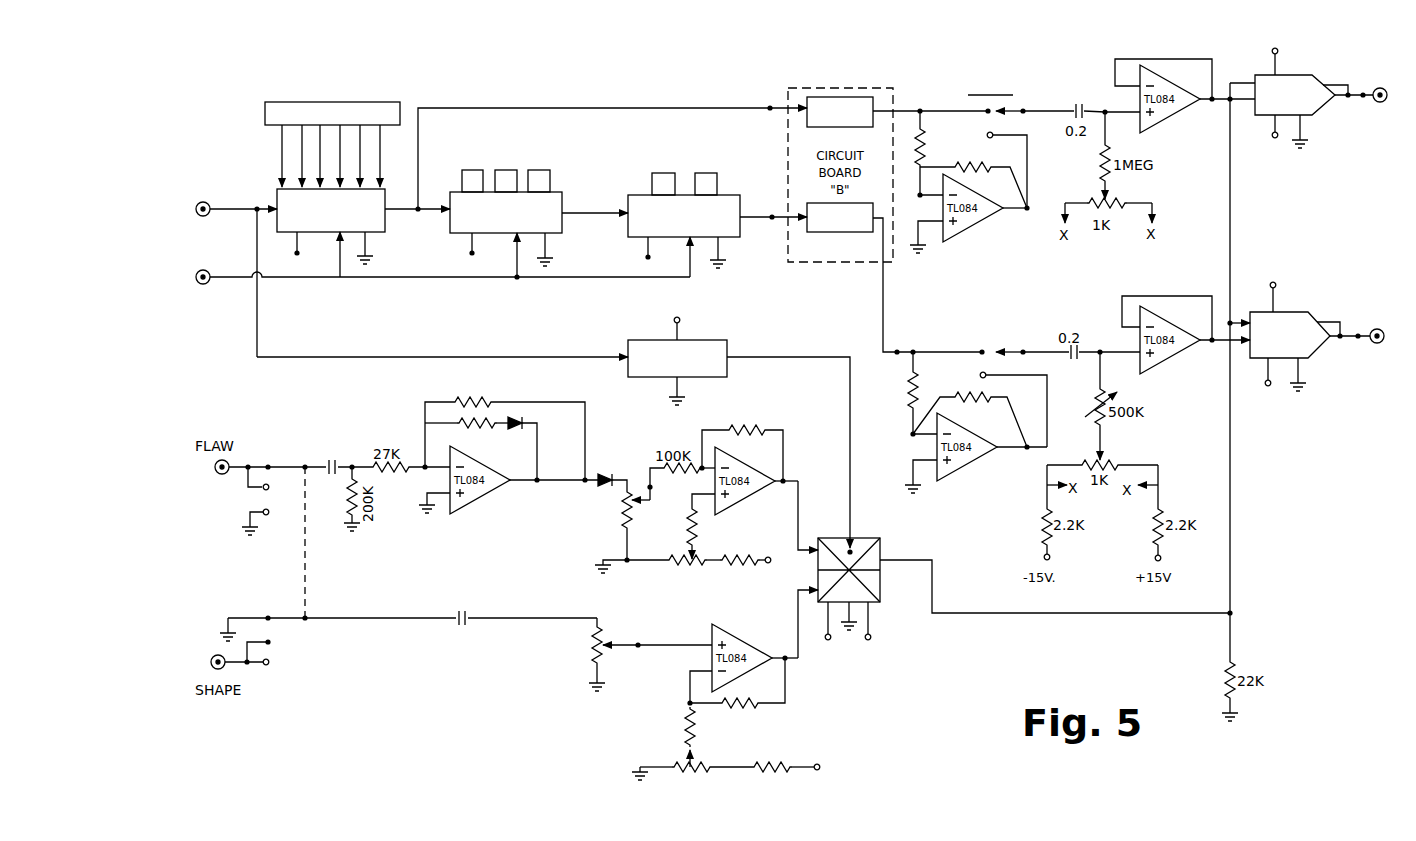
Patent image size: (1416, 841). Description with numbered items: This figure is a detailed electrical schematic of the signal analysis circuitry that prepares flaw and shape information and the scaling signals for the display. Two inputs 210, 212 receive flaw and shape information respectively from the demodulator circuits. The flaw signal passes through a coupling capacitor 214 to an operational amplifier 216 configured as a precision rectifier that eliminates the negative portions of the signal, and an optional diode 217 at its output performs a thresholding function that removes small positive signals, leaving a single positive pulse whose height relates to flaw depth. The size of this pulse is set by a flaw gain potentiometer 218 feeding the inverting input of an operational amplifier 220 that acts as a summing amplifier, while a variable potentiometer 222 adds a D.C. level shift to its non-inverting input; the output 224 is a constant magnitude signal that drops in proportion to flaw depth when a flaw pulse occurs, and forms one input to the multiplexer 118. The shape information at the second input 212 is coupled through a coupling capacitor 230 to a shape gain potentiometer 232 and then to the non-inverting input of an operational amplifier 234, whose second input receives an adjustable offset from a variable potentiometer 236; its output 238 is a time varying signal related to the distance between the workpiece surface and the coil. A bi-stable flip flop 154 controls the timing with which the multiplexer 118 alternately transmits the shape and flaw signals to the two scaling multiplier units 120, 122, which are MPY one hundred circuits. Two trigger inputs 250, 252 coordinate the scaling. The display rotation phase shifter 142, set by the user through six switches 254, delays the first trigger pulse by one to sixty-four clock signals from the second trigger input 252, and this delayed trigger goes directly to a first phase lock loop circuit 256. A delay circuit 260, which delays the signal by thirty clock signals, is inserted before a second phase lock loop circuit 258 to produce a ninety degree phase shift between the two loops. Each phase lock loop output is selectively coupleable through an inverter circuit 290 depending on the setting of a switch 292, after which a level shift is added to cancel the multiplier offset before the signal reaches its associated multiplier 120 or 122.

The multiplexer 118 is at (882, 593).
The scaling multiplier unit 120 is at (1310, 359).
The scaling multiplier unit 122 is at (1318, 118).
The display rotation phase shifter 142 is at (377, 223).
The bi-stable flip flop 154 is at (707, 340).
The input 210 is at (258, 463).
The input 212 is at (247, 618).
The coupling capacitor 214 is at (325, 472).
The operational amplifier 216 is at (477, 498).
The diode 217 is at (625, 440).
The flaw gain potentiometer 218 is at (627, 510).
The operational amplifier 220 is at (737, 503).
The variable potentiometer 222 is at (713, 560).
The output 224 is at (802, 523).
The coupling capacitor 230 is at (460, 625).
The shape gain potentiometer 232 is at (605, 638).
The operational amplifier 234 is at (740, 623).
The variable potentiometer 236 is at (697, 770).
The output 238 is at (797, 618).
The input 250 is at (248, 205).
The input 252 is at (325, 280).
The switches 254 is at (345, 64).
The first phase lock loop circuit 256 is at (825, 97).
The second phase lock loop circuit 258 is at (867, 231).
The delay circuit 260 is at (632, 195).
The inverter circuit 290 is at (970, 228).
The switch 292 is at (1023, 110).